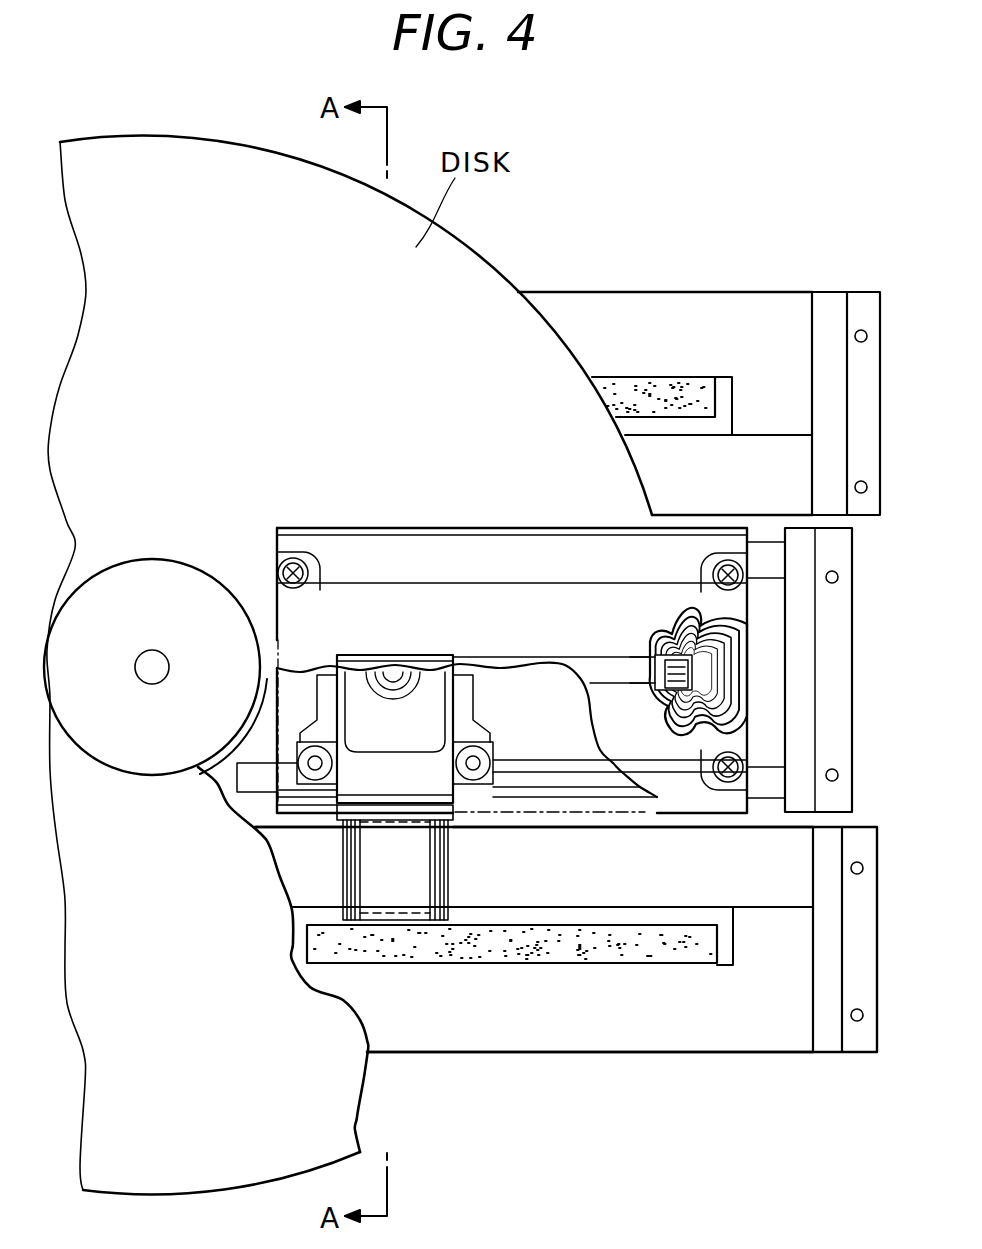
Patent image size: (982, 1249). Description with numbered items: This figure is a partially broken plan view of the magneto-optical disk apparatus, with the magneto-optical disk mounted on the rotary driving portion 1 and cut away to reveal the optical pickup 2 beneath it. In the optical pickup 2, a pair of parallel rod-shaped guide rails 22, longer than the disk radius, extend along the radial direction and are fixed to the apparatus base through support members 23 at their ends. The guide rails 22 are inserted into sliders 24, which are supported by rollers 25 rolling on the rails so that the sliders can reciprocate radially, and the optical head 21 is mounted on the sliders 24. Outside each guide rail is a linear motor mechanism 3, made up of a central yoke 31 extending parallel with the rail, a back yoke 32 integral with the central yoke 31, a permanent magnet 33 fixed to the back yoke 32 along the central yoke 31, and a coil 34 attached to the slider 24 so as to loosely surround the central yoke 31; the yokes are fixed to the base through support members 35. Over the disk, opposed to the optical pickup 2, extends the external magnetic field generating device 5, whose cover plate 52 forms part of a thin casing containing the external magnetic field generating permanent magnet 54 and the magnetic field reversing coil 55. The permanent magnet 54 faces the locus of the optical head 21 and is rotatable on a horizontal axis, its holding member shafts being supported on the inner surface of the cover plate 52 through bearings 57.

The rotary driving portion 1 is at (162, 750).
The optical pickup 2 is at (466, 874).
The linear motor mechanism 3 is at (660, 1065).
The external magnetic field generating device 5 is at (393, 520).
The optical head 21 is at (350, 690).
The guide rails 22 is at (768, 554).
The support members 23 is at (822, 698).
The sliders 24 is at (412, 773).
The rollers 25 is at (478, 752).
The central yoke 31 is at (752, 462).
The back yoke 32 is at (602, 323).
The permanent magnet 33 is at (684, 390).
The coil 34 is at (397, 888).
The support members 35 is at (826, 342).
The cover plate 52 is at (613, 603).
The external magnetic field generating permanent magnet 54 is at (577, 667).
The magnetic field reversing coil 55 is at (750, 707).
The bearings 57 is at (708, 647).